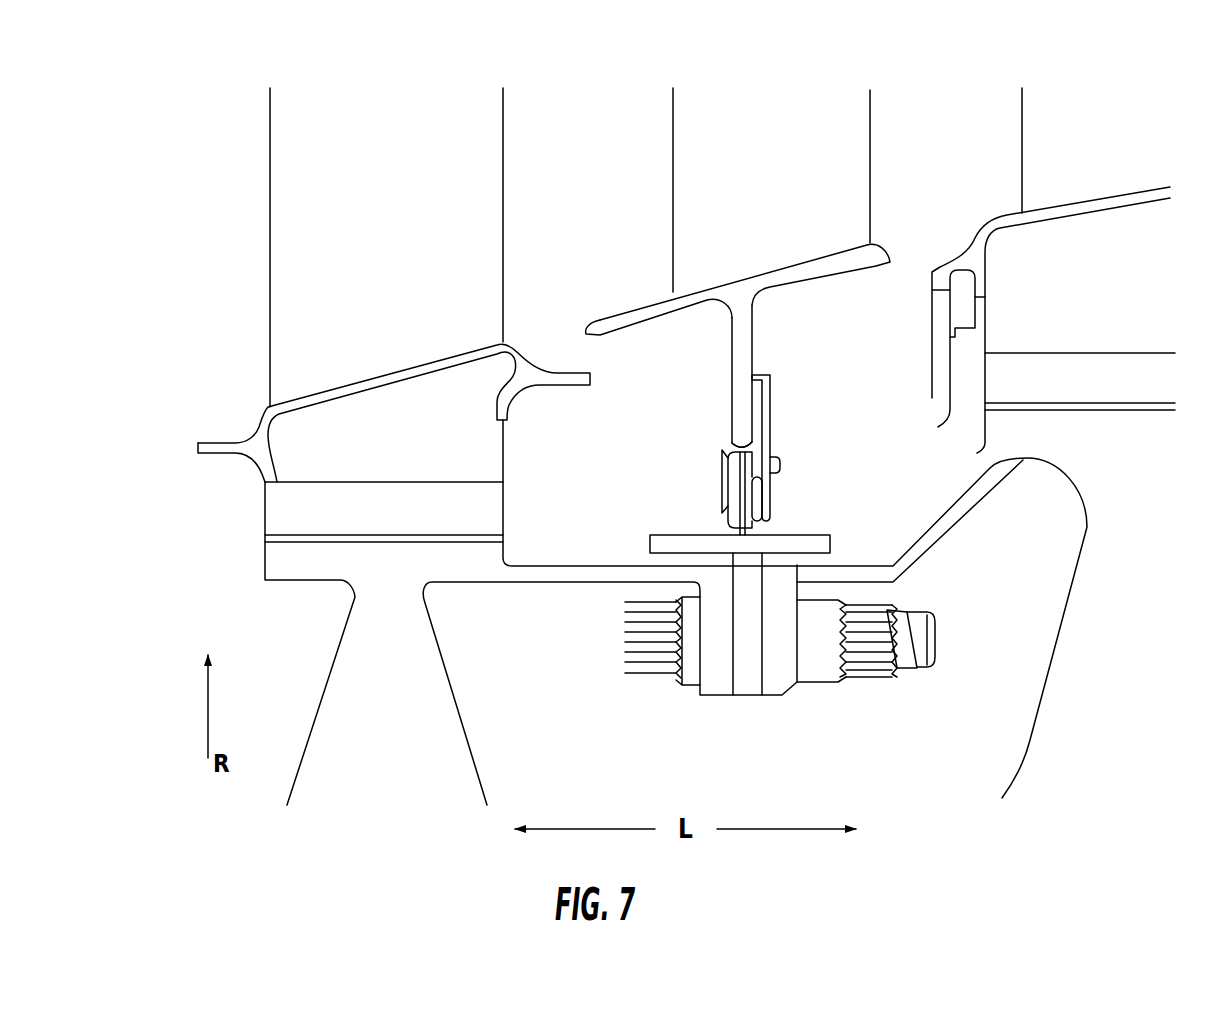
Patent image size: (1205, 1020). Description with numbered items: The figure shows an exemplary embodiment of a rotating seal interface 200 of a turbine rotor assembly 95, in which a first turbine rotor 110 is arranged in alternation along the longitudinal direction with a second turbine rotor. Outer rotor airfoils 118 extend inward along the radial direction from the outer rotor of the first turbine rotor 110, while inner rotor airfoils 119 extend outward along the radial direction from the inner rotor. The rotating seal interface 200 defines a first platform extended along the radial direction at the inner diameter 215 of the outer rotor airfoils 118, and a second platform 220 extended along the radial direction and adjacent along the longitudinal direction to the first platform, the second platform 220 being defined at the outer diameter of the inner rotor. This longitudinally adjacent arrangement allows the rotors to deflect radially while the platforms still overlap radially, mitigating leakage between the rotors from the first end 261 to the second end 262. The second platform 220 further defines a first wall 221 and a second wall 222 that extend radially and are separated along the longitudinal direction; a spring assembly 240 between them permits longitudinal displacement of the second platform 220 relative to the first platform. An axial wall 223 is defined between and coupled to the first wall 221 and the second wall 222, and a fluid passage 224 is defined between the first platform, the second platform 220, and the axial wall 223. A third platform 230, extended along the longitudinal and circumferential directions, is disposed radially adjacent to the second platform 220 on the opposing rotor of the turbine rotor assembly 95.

The turbine rotor assembly 95 is at (735, 70).
The first turbine rotor 110 is at (889, 144).
The outer rotor airfoils 118 is at (761, 182).
The inner rotor airfoils 119 is at (372, 242).
The rotating seal interface 200 is at (734, 407).
The inner diameter of the outer rotor airfoils 215 is at (767, 349).
The second platform 220 is at (742, 400).
The first wall 221 is at (693, 497).
The second wall 222 is at (773, 485).
The axial wall 223 is at (722, 447).
The fluid passage 224 is at (742, 436).
The third platform 230 is at (650, 537).
The spring assembly 240 is at (750, 490).
The first end 261 is at (590, 465).
The second end 262 is at (847, 467).